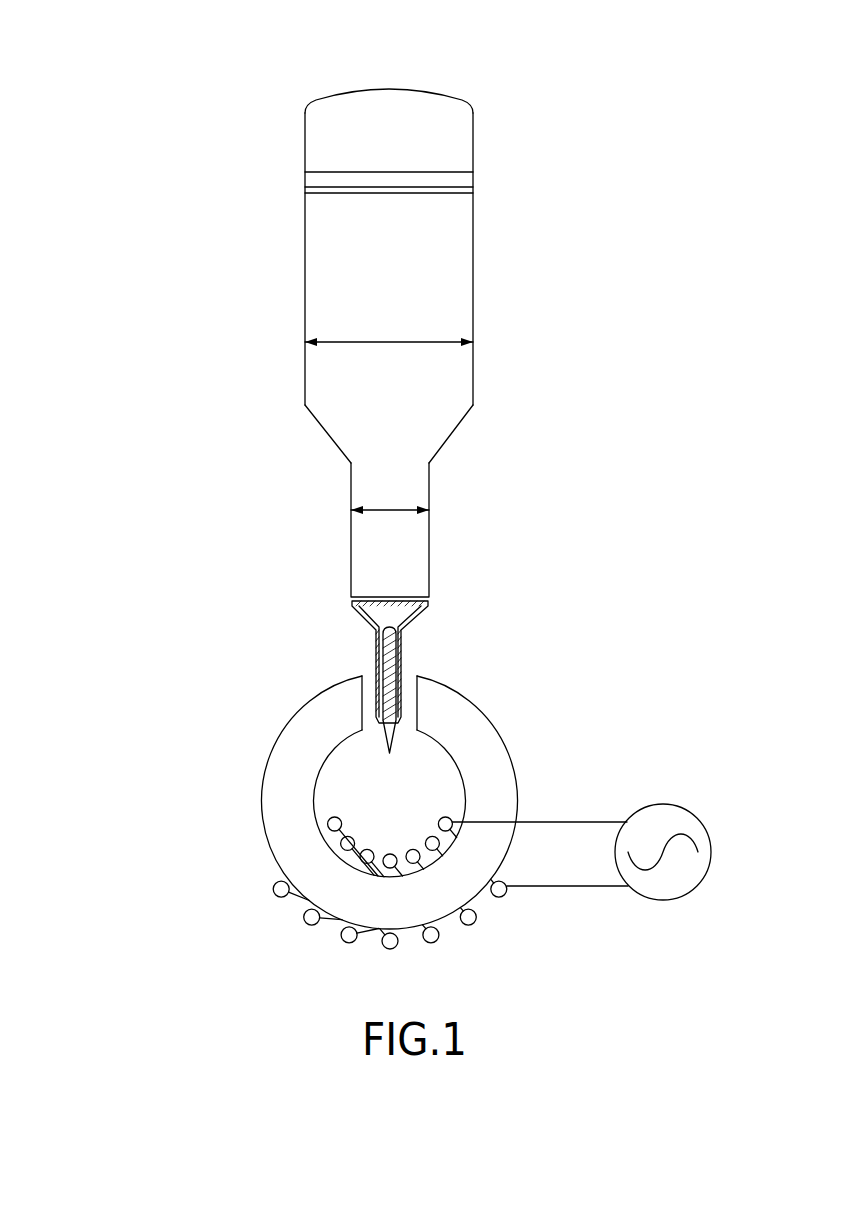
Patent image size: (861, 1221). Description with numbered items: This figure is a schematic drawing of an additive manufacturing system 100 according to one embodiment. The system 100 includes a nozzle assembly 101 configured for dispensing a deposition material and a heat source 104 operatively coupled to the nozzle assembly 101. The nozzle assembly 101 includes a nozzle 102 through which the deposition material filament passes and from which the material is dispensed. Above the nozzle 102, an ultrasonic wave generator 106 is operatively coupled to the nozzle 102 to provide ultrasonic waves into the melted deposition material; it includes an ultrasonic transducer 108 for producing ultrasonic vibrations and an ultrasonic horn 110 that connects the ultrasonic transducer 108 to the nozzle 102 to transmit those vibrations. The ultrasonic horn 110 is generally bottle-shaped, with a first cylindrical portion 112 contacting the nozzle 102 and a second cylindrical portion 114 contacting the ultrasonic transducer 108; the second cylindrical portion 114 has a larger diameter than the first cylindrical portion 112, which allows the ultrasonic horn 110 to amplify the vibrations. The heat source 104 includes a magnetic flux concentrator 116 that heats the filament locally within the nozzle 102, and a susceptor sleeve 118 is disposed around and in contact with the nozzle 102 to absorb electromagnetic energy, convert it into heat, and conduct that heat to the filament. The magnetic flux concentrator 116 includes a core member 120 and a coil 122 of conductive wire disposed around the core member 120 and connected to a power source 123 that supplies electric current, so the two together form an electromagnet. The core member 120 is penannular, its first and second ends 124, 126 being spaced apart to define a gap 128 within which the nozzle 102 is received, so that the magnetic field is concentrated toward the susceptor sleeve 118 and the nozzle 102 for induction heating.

The additive manufacturing system 100 is at (140, 140).
The nozzle assembly 101 is at (434, 647).
The nozzle 102 is at (397, 650).
The heat source 104 is at (433, 800).
The ultrasonic wave generator 106 is at (456, 304).
The ultrasonic transducer 108 is at (383, 103).
The ultrasonic horn 110 is at (315, 273).
The first cylindrical portion 112 is at (425, 547).
The second cylindrical portion 114 is at (473, 258).
The magnetic flux concentrator 116 is at (489, 800).
The susceptor sleeve 118 is at (365, 618).
The core member 120 is at (272, 755).
The coil 122 is at (310, 925).
The power source 123 is at (665, 905).
The first end 124 is at (360, 693).
The second end 126 is at (412, 685).
The gap 128 is at (408, 715).